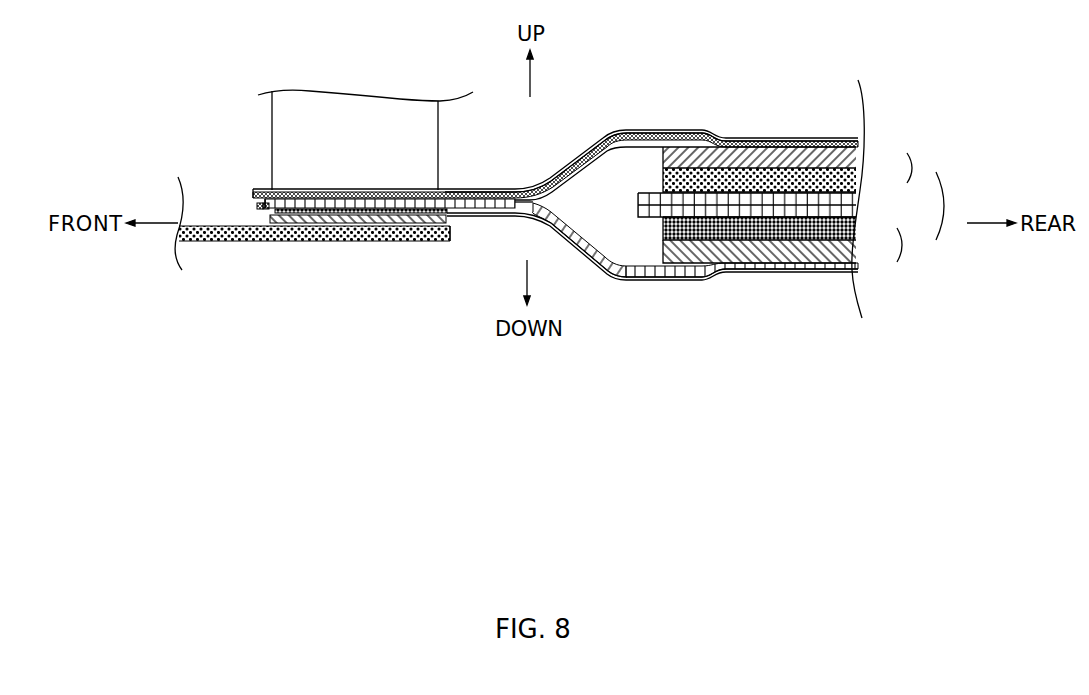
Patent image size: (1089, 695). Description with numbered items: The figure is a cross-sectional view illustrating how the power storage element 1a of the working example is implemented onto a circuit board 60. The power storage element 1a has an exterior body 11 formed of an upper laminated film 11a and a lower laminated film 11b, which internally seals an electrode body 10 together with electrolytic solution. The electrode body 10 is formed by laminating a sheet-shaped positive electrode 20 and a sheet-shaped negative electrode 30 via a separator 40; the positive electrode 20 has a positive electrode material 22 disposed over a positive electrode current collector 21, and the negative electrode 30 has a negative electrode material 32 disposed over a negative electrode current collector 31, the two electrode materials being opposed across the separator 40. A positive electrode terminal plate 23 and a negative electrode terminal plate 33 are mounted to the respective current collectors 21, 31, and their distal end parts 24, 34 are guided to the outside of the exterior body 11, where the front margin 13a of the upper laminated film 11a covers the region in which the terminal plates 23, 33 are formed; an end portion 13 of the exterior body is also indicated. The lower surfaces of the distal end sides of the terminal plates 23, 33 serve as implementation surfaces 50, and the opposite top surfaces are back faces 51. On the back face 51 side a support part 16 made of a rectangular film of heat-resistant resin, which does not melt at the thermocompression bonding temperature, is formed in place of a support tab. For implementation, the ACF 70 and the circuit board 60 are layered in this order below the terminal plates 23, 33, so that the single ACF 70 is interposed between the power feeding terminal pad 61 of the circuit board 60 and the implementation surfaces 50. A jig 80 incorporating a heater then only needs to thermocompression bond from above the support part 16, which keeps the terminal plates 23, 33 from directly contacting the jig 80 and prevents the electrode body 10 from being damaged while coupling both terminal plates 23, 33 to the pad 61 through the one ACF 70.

The power storage element 1a is at (822, 302).
The electrode body 10 is at (808, 204).
The exterior body 11 is at (555, 207).
The upper laminated film 11a is at (777, 137).
The lower laminated film 11b is at (754, 273).
The end portion 13 is at (447, 190).
The front margin 13a is at (249, 195).
The support part 16 is at (282, 195).
The positive electrode 20 is at (803, 168).
The positive electrode current collector 21 is at (855, 160).
The positive electrode material 22 is at (855, 182).
The positive electrode terminal plate 23 is at (658, 128).
The distal end part 24 is at (258, 205).
The negative electrode 30 is at (801, 241).
The negative electrode current collector 31 is at (847, 257).
The negative electrode material 32 is at (847, 233).
The negative electrode terminal plate 33 is at (667, 280).
The distal end part 34 is at (266, 206).
The separator 40 is at (847, 207).
The implementation surface 50 is at (312, 241).
The back face 51 is at (389, 195).
The circuit board 60 is at (391, 230).
The power feeding terminal pad 61 is at (350, 221).
The ACF 70 is at (259, 208).
The jig 80 is at (326, 106).